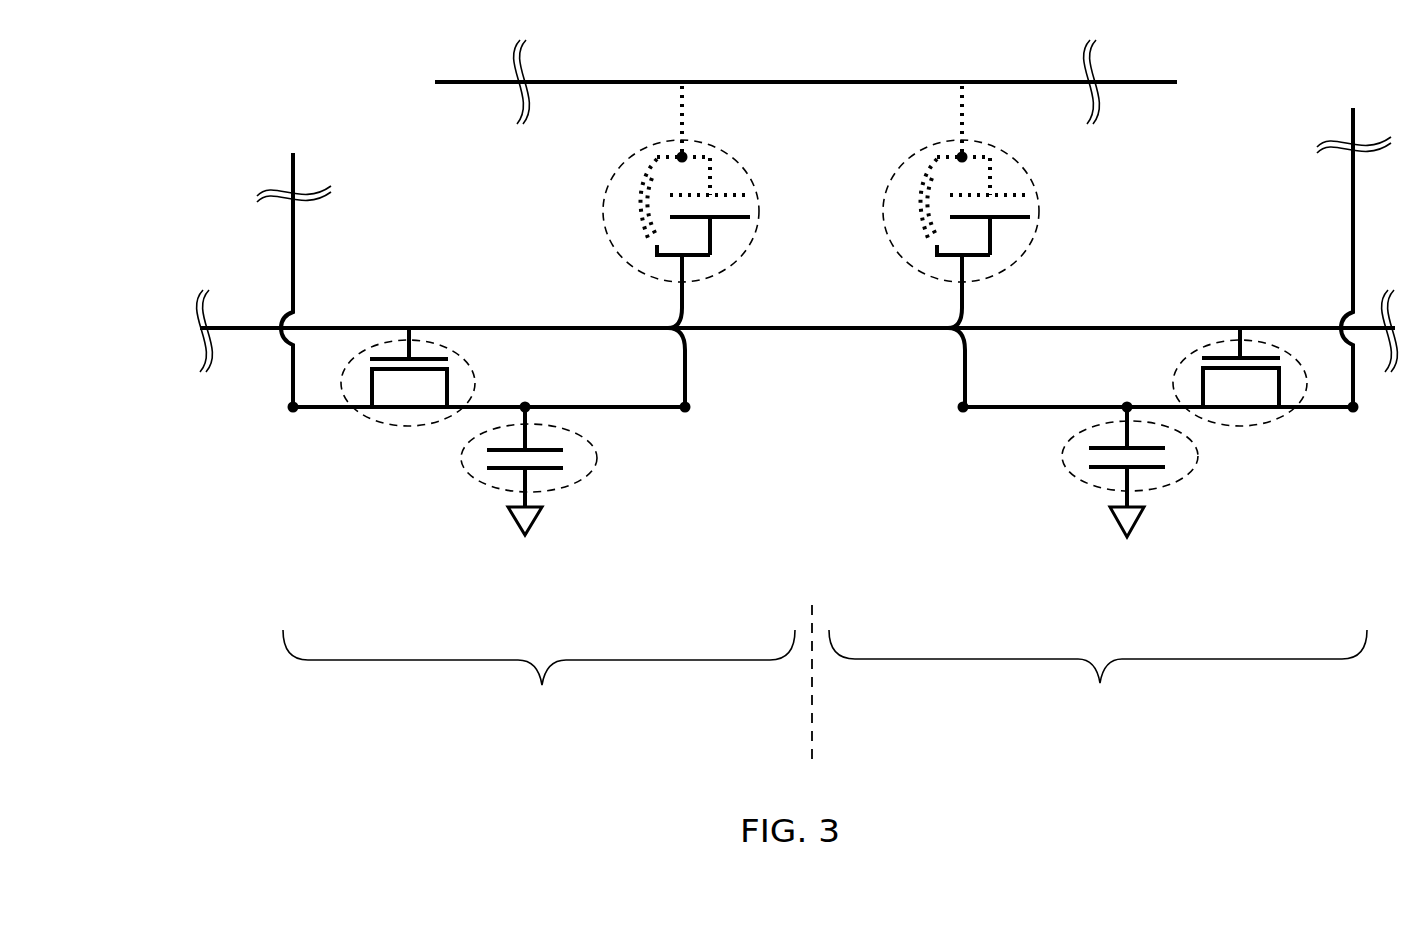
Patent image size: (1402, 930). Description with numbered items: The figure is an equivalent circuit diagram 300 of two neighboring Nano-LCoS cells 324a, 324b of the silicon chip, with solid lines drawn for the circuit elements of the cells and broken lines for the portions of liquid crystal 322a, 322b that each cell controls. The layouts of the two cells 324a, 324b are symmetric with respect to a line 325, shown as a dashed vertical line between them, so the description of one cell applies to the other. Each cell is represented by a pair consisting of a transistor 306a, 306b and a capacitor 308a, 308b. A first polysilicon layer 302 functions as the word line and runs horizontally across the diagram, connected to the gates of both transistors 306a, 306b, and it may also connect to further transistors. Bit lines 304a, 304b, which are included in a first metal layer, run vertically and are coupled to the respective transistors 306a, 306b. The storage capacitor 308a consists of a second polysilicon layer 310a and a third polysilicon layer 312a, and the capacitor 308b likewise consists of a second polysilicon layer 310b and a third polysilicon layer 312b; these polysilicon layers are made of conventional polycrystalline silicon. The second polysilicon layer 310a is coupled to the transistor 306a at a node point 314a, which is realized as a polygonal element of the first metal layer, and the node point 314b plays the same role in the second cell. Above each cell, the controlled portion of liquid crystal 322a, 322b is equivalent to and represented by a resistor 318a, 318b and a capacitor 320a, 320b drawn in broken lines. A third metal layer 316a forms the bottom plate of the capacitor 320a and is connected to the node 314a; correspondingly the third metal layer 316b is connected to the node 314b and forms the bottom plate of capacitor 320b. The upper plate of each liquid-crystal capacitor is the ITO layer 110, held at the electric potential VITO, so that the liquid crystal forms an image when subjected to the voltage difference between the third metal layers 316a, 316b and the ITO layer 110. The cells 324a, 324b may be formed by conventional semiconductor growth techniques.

The nano-LCoS cell circuit 300 is at (308, 62).
The ITO layer 110 is at (775, 82).
The Poly-1 layer 302 is at (268, 331).
The bit line 304a is at (296, 236).
The bit line 304b is at (1350, 253).
The transistor 306a is at (362, 357).
The transistor 306b is at (1187, 357).
The capacitor 308a is at (520, 496).
The capacitor 308b is at (1119, 497).
The Poly-2 layer 310a is at (490, 451).
The Poly-2 layer 310b is at (1087, 450).
The Poly-3 layer 312a is at (456, 524).
The Poly-3 layer 312b is at (1059, 521).
The node point 314a is at (532, 405).
The node point 314b is at (1126, 404).
The Metal-3 layer 316a is at (690, 258).
The Metal-3 layer 316b is at (975, 260).
The resistor 318a is at (690, 246).
The resistor 318b is at (974, 246).
The capacitor 320a is at (727, 190).
The capacitor 320b is at (1015, 193).
The portion of liquid crystal 322a is at (632, 221).
The portion of liquid crystal 322b is at (912, 221).
The Nano-LCoS cell 324a is at (539, 693).
The Nano-LCoS cell 324b is at (1098, 698).
The line 325 is at (810, 700).